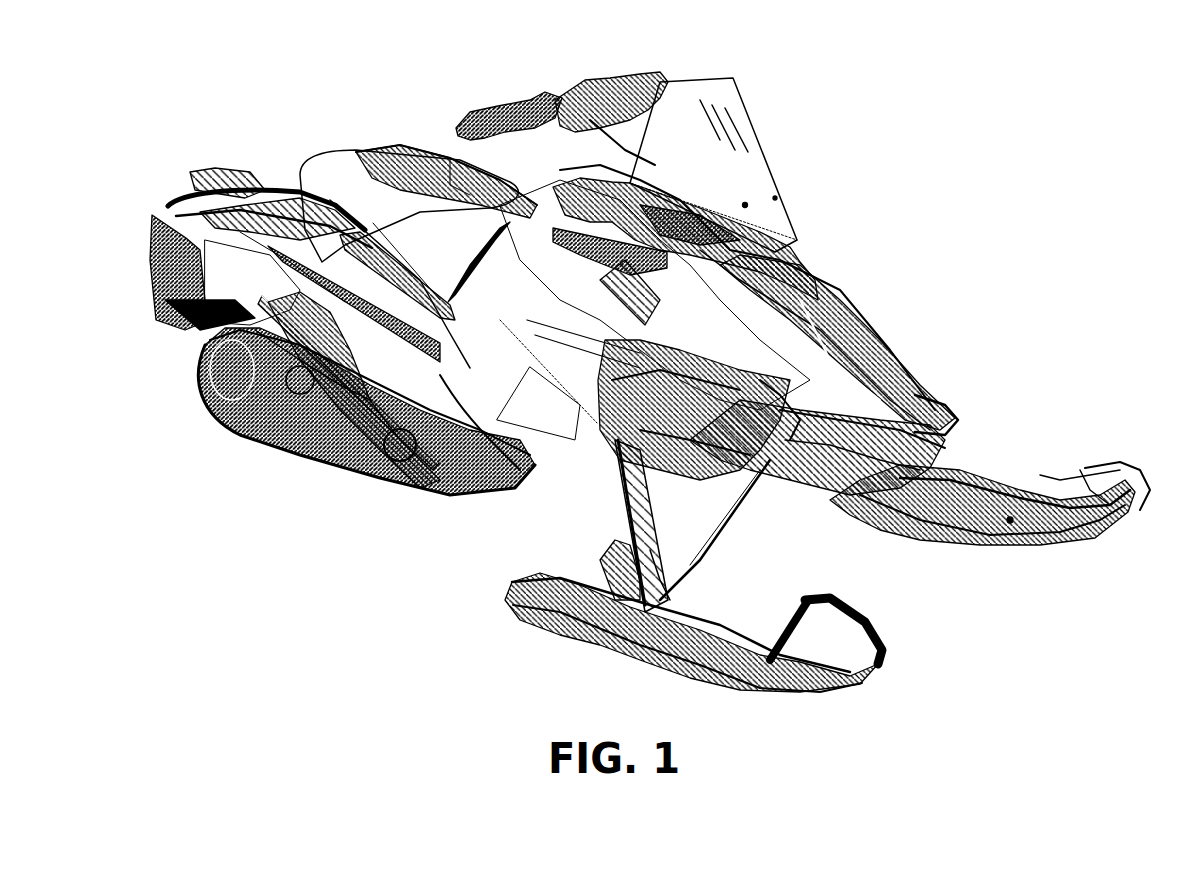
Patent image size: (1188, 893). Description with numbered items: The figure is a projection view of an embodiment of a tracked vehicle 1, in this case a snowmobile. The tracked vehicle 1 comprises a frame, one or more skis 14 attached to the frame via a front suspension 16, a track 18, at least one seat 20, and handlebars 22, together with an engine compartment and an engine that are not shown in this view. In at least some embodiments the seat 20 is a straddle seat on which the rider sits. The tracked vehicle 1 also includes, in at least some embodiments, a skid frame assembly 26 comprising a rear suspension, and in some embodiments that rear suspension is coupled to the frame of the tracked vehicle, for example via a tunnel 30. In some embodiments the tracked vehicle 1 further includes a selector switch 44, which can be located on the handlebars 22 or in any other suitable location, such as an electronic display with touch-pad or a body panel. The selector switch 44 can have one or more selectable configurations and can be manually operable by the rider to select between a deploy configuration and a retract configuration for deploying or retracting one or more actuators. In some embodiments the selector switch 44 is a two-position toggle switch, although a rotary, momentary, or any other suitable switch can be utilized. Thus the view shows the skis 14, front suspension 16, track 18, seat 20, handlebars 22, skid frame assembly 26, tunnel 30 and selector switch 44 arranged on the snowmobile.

The tracked vehicle 1 is at (962, 106).
The skis 14 is at (1003, 452).
The front suspension 16 is at (746, 540).
The track 18 is at (350, 488).
The seat 20 is at (413, 158).
The handlebars 22 is at (562, 108).
The skid frame assembly 26 is at (262, 460).
The tunnel 30 is at (281, 146).
The selector switch 44 is at (534, 98).